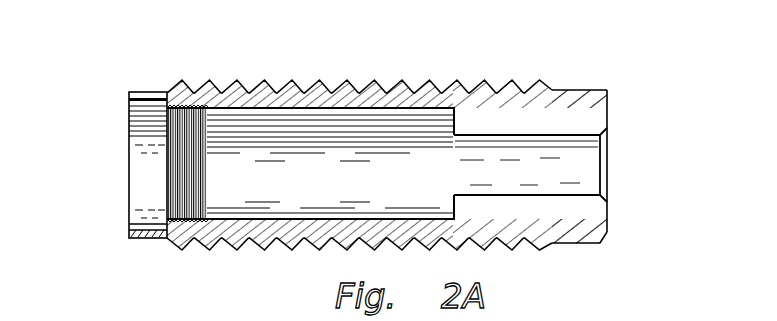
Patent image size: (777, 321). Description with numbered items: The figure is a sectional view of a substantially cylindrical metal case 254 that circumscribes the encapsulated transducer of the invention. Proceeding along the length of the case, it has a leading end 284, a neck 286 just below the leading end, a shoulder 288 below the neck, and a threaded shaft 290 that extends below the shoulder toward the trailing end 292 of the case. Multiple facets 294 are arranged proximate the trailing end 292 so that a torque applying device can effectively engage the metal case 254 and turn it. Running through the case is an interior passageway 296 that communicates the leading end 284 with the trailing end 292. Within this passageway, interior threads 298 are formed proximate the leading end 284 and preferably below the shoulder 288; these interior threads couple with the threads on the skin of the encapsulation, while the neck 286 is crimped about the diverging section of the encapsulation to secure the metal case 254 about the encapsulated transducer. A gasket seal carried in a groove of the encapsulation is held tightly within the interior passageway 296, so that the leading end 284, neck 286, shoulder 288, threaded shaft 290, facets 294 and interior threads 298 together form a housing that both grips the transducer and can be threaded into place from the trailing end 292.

The metal case 254 is at (572, 58).
The leading end 284 is at (128, 95).
The neck 286 is at (149, 93).
The shoulder 288 is at (170, 92).
The threaded shaft 290 is at (413, 83).
The trailing end 292 is at (609, 110).
The facets 294 is at (591, 90).
The interior passageway 296 is at (248, 200).
The interior threads 298 is at (188, 218).